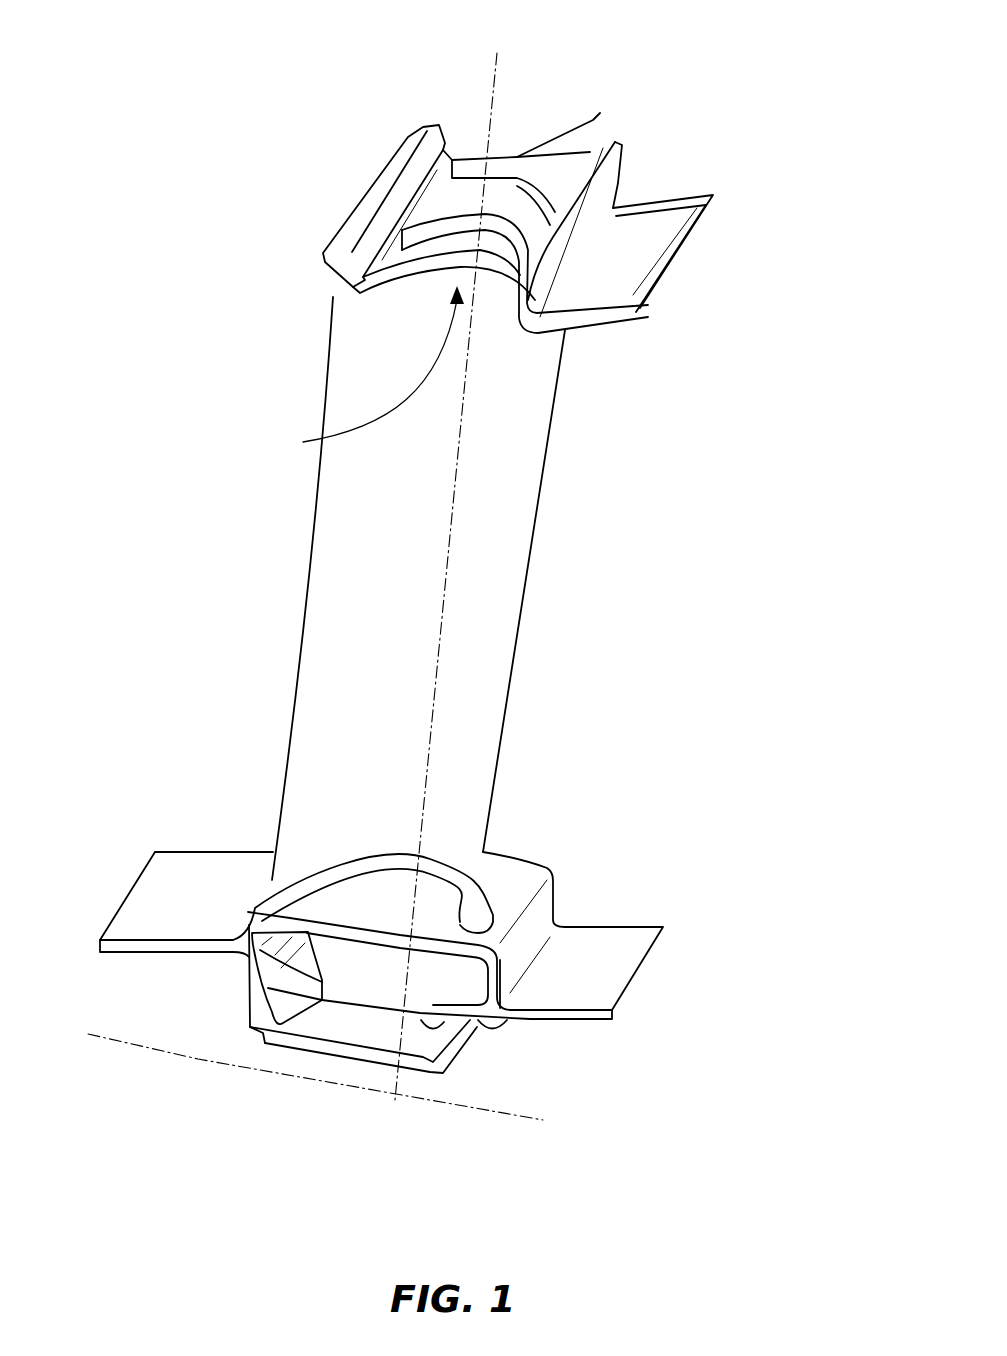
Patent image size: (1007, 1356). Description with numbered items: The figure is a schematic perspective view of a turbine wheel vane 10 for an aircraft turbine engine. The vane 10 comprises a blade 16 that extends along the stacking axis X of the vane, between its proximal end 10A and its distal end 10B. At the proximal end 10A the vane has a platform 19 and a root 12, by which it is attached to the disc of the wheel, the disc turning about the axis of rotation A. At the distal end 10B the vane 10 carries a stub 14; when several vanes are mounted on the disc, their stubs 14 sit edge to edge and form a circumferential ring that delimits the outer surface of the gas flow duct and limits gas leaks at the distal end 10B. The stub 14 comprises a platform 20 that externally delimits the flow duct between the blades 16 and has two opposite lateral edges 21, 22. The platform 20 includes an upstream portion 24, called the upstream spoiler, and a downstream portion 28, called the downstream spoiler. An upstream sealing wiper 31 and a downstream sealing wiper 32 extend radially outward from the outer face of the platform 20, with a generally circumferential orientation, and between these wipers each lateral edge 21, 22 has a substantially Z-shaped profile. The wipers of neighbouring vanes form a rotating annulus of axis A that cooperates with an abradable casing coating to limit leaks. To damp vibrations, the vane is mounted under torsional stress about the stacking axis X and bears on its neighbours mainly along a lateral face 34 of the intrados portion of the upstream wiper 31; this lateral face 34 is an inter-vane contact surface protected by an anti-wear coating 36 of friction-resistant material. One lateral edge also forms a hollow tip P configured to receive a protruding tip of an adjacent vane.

The vane 10 is at (236, 468).
The proximal end 10A is at (567, 856).
The distal end 10B is at (626, 116).
The root 12 is at (430, 1072).
The stub 14 is at (352, 104).
The blade 16 is at (488, 598).
The platform 19 is at (617, 950).
The platform 20 is at (483, 150).
The lateral edge 21 is at (515, 148).
The lateral edge 22 is at (437, 282).
The upstream portion 24 is at (627, 263).
The downstream portion 28 is at (340, 227).
The upstream sealing wiper 31 is at (596, 218).
The downstream sealing wiper 32 is at (377, 183).
The lateral face 34 is at (623, 152).
The anti-wear coating 36 is at (622, 167).
The stacking axis X is at (500, 88).
The hollow tip P is at (366, 379).
The axis of rotation A is at (213, 1050).